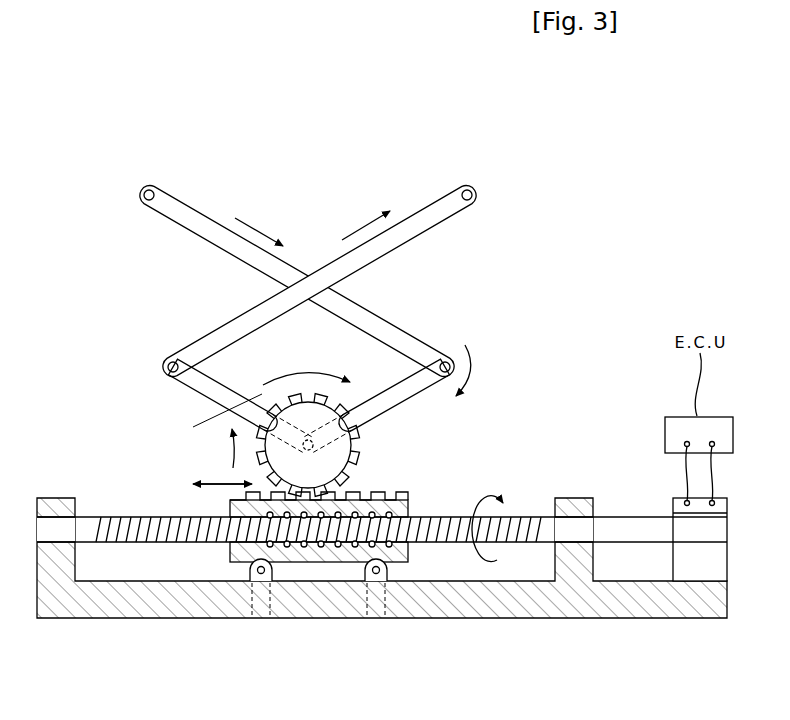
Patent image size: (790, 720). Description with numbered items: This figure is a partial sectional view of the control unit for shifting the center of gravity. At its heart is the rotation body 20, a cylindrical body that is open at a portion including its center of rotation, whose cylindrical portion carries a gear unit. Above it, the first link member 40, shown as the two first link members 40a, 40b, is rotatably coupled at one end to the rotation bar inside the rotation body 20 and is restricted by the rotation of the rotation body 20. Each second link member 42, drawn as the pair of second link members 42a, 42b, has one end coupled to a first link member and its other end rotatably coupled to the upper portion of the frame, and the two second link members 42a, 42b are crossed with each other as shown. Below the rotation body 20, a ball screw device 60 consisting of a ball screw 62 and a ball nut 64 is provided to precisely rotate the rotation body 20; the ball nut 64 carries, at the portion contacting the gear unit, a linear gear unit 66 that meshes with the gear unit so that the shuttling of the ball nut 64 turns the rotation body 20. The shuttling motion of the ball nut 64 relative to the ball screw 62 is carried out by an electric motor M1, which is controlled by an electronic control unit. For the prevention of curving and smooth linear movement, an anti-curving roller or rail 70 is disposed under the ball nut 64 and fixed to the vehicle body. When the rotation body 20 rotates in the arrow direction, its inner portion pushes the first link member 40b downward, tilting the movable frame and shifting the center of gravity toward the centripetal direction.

The rotation body 20 is at (330, 465).
The first link member 40 is at (252, 395).
The first link member 40a is at (205, 386).
The first link member 40b is at (193, 427).
The second link member 42 is at (308, 246).
The second link member 42a is at (219, 217).
The second link member 42b is at (238, 131).
The ball screw device 60 is at (620, 508).
The ball screw 62 is at (532, 544).
The ball nut 64 is at (412, 562).
The linear gear unit 66 is at (373, 563).
The anti-curving roller or rail 70 is at (256, 575).
The electric motor M1 is at (697, 568).